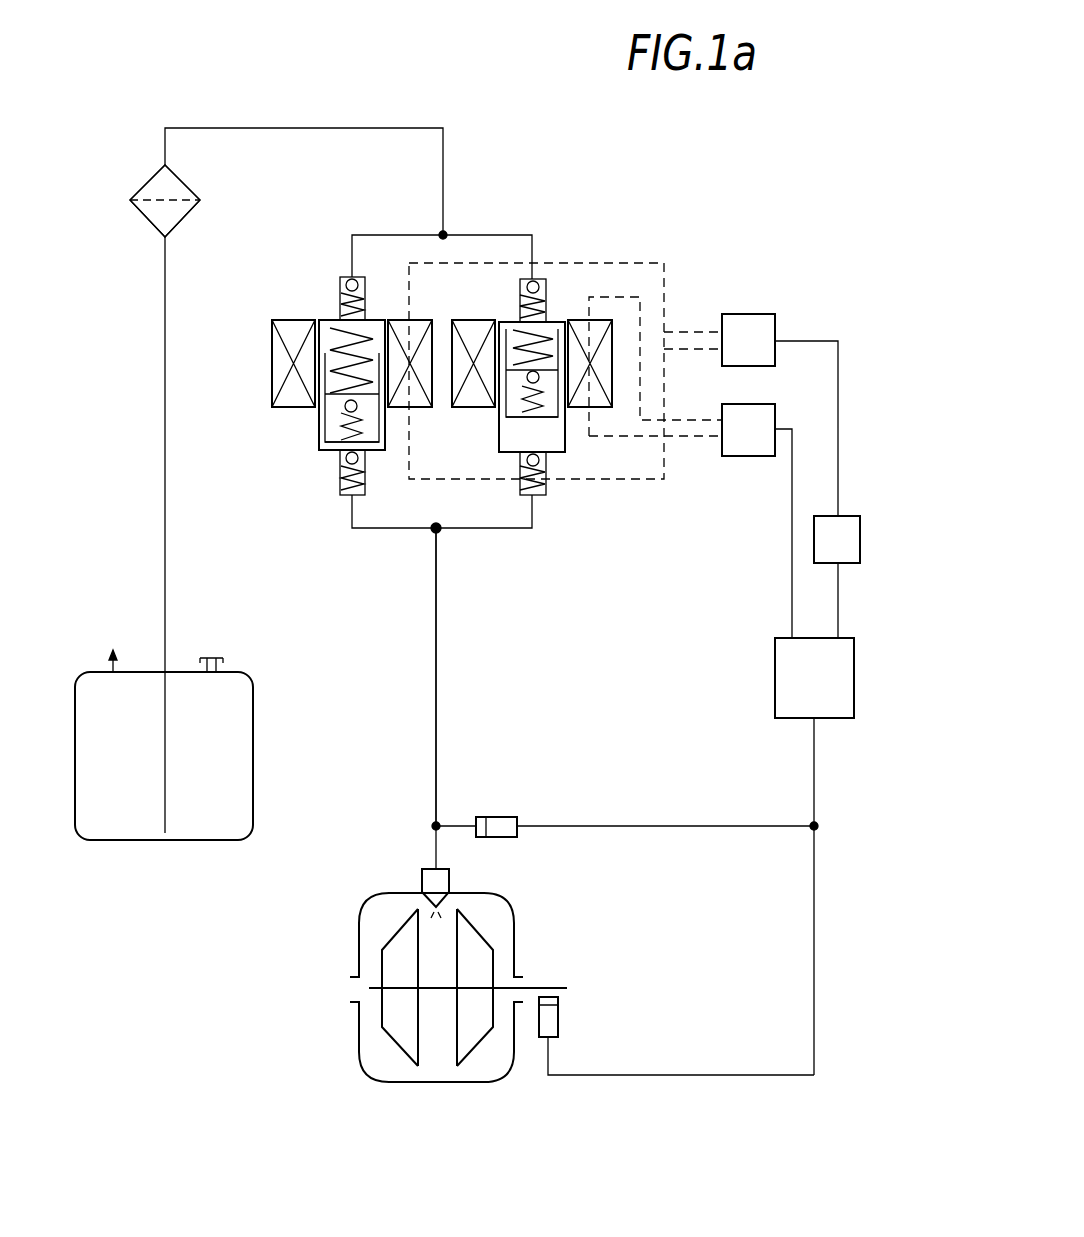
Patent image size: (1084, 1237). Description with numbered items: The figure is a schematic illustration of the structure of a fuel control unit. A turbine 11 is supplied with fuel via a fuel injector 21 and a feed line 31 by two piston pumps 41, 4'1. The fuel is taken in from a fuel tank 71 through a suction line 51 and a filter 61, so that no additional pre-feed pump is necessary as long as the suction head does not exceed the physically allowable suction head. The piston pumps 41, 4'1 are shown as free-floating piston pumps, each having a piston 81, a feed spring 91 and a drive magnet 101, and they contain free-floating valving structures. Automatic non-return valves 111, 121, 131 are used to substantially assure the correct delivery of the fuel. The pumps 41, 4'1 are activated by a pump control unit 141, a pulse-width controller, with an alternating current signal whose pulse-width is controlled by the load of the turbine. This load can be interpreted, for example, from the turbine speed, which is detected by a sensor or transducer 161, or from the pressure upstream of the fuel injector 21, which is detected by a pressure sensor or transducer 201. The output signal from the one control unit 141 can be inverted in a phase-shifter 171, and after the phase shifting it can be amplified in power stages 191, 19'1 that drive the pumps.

The turbine 11 is at (380, 1057).
The fuel injector 21 is at (430, 882).
The feed line 31 is at (436, 673).
The piston pump 41 is at (553, 435).
The piston pump 4'1 is at (330, 399).
The suction line 51 is at (165, 142).
The filter 61 is at (145, 217).
The fuel tank 71 is at (253, 753).
The piston 81 is at (507, 413).
The feed spring 91 is at (340, 338).
The drive magnet 101 is at (465, 320).
The automatic non-return valve 111 is at (338, 480).
The automatic non-return valve 121 is at (332, 413).
The automatic non-return valve 131 is at (340, 300).
The pump control unit 141 is at (854, 670).
The sensor or transducer 161 is at (560, 1023).
The phase-shifter 171 is at (852, 516).
The power stage 191 is at (742, 456).
The power stage 19'1 is at (763, 321).
The pressure sensor or transducer 201 is at (497, 815).